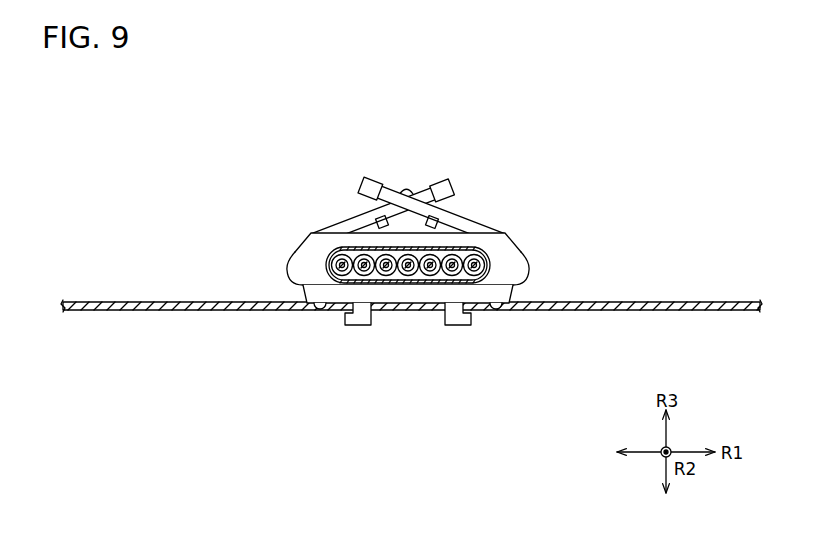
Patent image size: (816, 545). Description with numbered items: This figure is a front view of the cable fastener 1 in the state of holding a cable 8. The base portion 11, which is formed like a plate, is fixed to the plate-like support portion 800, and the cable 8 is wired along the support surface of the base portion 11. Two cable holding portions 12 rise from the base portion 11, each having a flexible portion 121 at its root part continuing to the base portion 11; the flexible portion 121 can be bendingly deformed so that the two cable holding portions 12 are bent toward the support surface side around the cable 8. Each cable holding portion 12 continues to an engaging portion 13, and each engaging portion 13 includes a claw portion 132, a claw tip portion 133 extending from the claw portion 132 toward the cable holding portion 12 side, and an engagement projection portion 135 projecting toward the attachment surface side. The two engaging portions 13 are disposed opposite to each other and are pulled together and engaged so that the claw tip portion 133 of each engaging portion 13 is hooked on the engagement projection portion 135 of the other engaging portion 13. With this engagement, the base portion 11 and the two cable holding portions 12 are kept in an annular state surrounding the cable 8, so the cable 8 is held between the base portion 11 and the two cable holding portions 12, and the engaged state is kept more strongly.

The cable fastener 1 is at (533, 175).
The cable 8 is at (353, 247).
The base portion 11 is at (526, 290).
The cable holding portion 12 is at (303, 230).
The flexible portion 121 is at (287, 275).
The engaging portion 13 is at (409, 171).
The claw portion 132 is at (358, 182).
The claw tip portion 133 is at (417, 192).
The engagement projection portion 135 is at (400, 188).
The plate-like support portion 800 is at (162, 310).